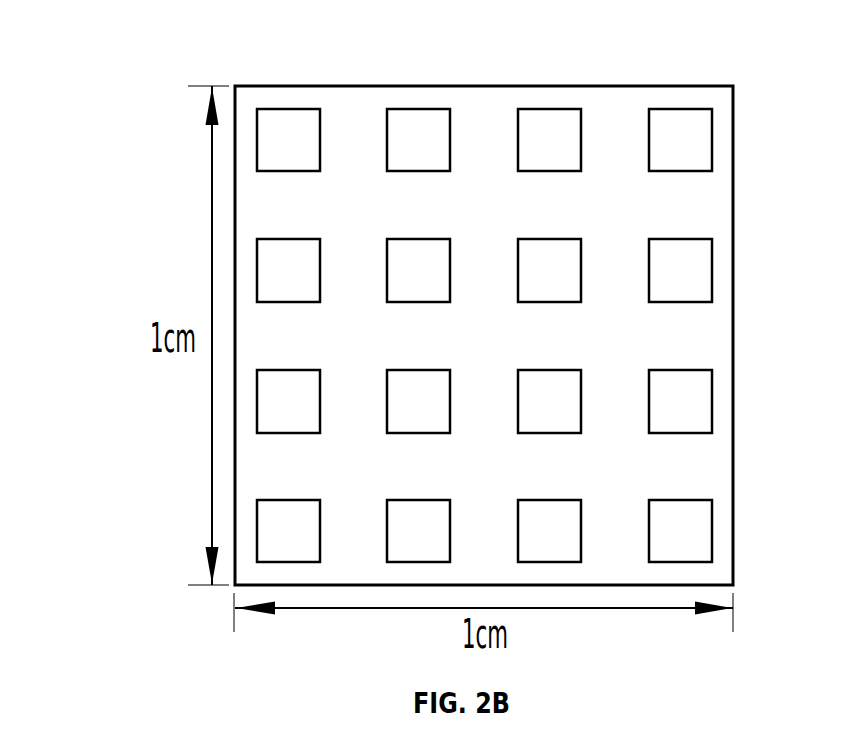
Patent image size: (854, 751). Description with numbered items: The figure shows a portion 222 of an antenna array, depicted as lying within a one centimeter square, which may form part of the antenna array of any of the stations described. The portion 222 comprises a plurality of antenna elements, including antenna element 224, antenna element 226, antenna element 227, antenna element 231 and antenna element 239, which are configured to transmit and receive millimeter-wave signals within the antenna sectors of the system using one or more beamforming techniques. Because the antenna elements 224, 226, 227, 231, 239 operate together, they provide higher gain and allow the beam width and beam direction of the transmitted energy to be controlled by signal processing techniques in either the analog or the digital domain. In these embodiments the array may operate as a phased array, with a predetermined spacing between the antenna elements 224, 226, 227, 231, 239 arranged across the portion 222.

The portion 222 is at (118, 47).
The antenna element 224 is at (293, 108).
The antenna element 226 is at (549, 108).
The antenna element 227 is at (712, 139).
The antenna element 231 is at (712, 270).
The antenna element 239 is at (712, 530).